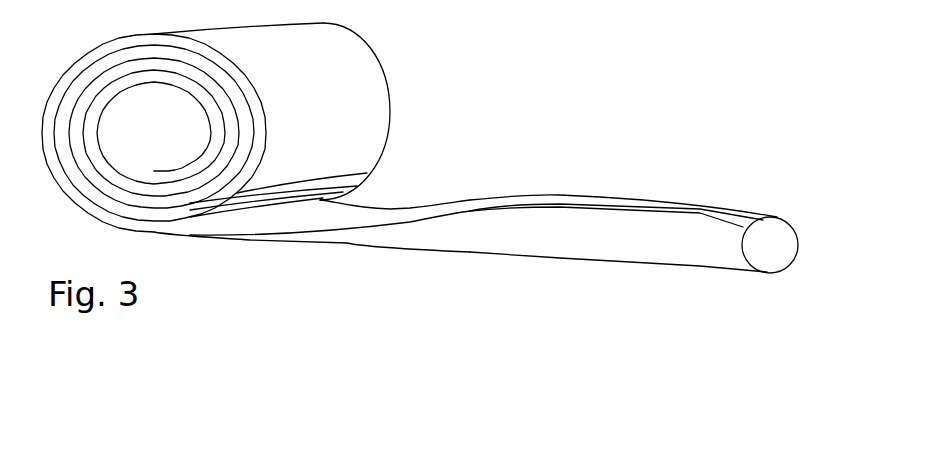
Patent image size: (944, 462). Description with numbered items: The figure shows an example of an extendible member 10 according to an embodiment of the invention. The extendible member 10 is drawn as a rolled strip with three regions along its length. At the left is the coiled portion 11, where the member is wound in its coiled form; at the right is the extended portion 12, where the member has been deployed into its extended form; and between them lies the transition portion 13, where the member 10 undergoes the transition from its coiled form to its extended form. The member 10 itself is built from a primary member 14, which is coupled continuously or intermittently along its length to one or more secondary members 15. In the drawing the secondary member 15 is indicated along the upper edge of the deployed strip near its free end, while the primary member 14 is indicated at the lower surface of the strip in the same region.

The extendible member 10 is at (462, 80).
The coiled portion 11 is at (52, 382).
The extended portion 12 is at (487, 382).
The transition portion 13 is at (270, 382).
The primary member 14 is at (713, 257).
The secondary member 15 is at (720, 220).